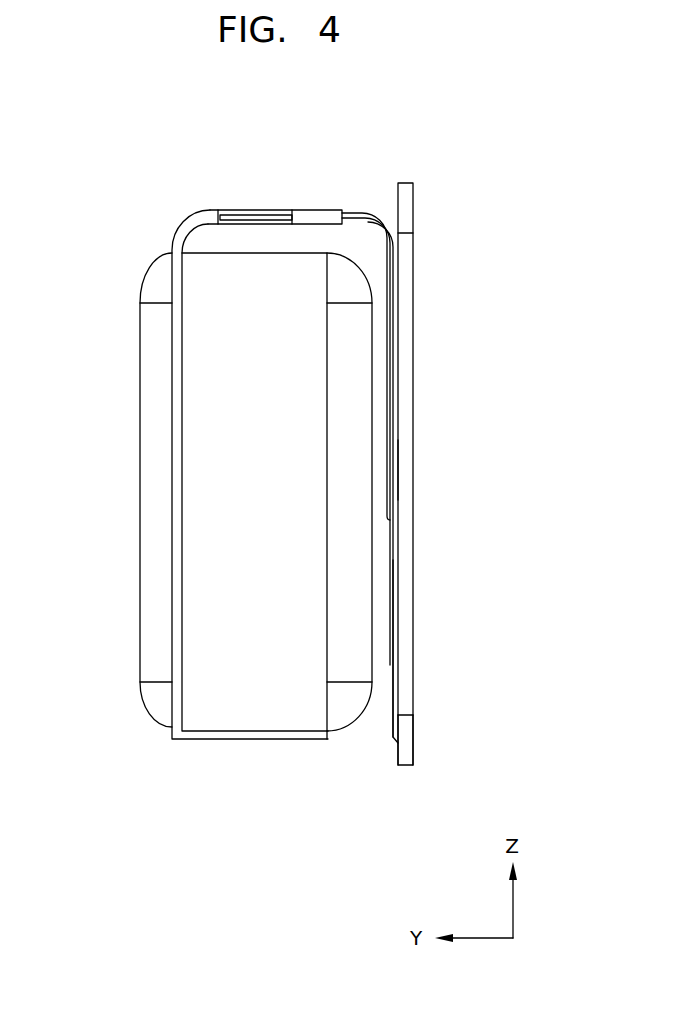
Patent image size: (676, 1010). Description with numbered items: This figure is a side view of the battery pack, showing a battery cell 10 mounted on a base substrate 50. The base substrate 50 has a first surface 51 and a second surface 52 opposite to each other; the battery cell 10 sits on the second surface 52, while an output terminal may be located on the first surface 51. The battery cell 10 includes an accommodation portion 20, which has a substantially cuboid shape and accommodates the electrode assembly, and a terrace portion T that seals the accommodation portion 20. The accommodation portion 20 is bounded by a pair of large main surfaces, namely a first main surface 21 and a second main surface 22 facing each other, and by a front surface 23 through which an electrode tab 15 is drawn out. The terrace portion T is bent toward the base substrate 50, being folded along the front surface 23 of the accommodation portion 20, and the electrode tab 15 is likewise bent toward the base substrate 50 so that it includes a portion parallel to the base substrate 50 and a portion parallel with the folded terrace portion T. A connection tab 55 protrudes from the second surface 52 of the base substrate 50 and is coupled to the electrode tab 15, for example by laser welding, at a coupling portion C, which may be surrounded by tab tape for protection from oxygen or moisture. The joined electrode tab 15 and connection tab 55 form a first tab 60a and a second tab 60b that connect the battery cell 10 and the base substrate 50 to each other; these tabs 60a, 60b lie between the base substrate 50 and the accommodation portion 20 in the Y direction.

The battery cell 10 is at (268, 496).
The electrode tab 15 is at (370, 216).
The accommodation portion 20 is at (228, 695).
The first main surface 21 is at (378, 353).
The second main surface 22 is at (140, 351).
The front surface 23 is at (257, 252).
The terrace portion T is at (317, 209).
The base substrate 50 is at (413, 192).
The first surface 51 is at (415, 755).
The second surface 52 is at (395, 755).
The connection tab 55 is at (396, 593).
The first tab 60a is at (464, 482).
The second tab 60b is at (405, 258).
The coupling portion C is at (398, 466).